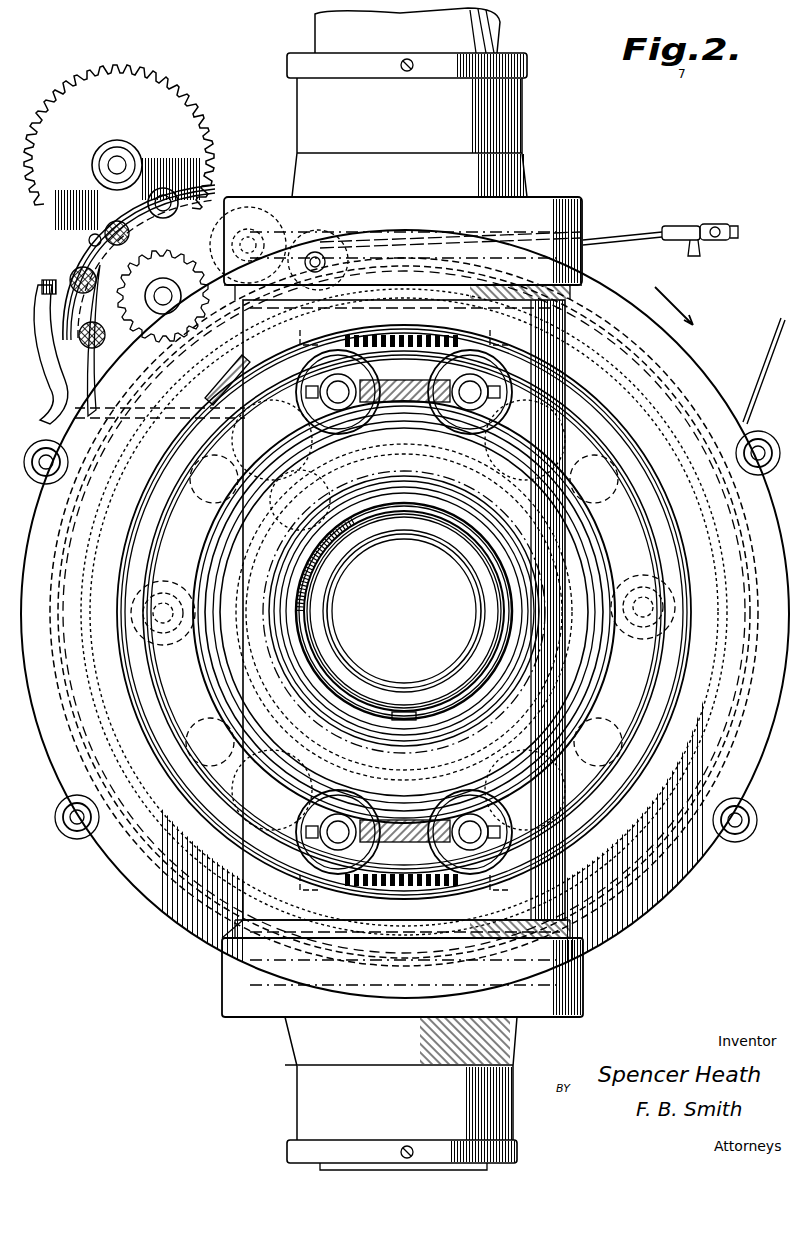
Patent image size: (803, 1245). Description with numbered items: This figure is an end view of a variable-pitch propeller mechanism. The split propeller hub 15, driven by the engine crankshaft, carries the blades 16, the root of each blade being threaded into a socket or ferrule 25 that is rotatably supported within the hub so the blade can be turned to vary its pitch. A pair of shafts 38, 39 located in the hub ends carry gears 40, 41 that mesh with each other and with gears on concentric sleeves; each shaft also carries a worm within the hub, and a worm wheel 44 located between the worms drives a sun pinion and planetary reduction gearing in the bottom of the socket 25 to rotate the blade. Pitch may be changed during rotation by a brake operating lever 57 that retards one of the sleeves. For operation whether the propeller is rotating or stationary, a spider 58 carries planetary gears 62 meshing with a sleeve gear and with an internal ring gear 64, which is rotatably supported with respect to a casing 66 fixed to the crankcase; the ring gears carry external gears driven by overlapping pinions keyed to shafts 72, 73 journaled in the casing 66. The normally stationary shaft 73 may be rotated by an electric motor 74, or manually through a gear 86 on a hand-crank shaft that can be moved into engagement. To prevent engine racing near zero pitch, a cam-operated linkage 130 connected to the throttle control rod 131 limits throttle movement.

The split propeller hub 15 is at (240, 985).
The blades 16 is at (315, 36).
The socket or ferrule 25 is at (522, 130).
The shaft 38 is at (470, 388).
The shaft 39 is at (338, 388).
The gear 40 is at (380, 335).
The gear 41 is at (448, 335).
The worm wheel 44 is at (360, 842).
The operating lever 57 is at (760, 400).
The spider 58 is at (200, 672).
The planetary gears 62 is at (706, 622).
The internal ring gear 64 is at (136, 806).
The casing 66 is at (690, 850).
The shaft 72 is at (279, 248).
The shaft 73 is at (160, 318).
The electric motor 74 is at (80, 252).
The gear 86 is at (190, 118).
The linkage 130 is at (655, 222).
The throttle control rod 131 is at (735, 226).